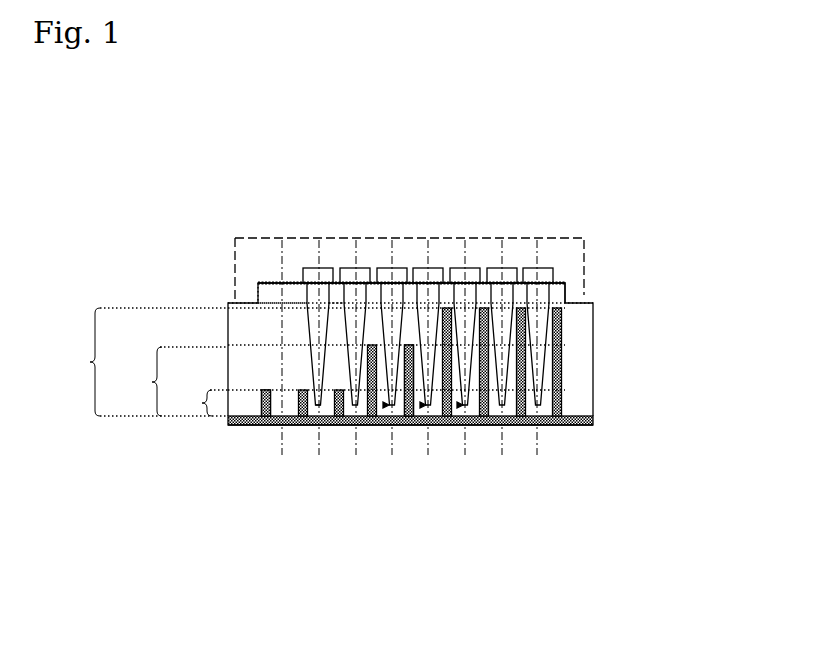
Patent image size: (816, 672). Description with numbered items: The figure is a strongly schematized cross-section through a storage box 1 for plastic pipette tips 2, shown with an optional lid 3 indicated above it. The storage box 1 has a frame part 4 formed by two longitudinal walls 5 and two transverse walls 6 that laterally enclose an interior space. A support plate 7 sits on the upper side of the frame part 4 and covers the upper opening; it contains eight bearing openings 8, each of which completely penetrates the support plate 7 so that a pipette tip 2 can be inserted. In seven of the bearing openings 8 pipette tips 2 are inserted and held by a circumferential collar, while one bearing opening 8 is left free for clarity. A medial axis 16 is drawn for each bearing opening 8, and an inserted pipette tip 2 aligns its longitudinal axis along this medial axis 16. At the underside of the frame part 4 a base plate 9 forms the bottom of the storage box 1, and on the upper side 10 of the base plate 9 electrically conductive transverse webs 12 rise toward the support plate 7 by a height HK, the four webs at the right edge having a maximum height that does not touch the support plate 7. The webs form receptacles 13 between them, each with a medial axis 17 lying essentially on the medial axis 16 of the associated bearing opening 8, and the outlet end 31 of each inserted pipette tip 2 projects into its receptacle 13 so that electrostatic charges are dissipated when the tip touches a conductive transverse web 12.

The storage box 1 is at (368, 325).
The plastic pipette tip 2 is at (367, 268).
The lid 3 is at (512, 238).
The frame part 4 is at (227, 340).
The longitudinal wall 5 is at (443, 349).
The transverse wall 6 is at (594, 332).
The support plate 7 is at (573, 290).
The bearing opening 8 is at (276, 288).
The base plate 9 is at (255, 426).
The upper side of the base plate 10 is at (578, 410).
The transverse web 12 is at (561, 378).
The receptacle 13 is at (418, 408).
The medial axis of the bearing opening 16 is at (419, 456).
The medial axis of the receptacle 17 is at (538, 430).
The outlet end 31 is at (318, 406).